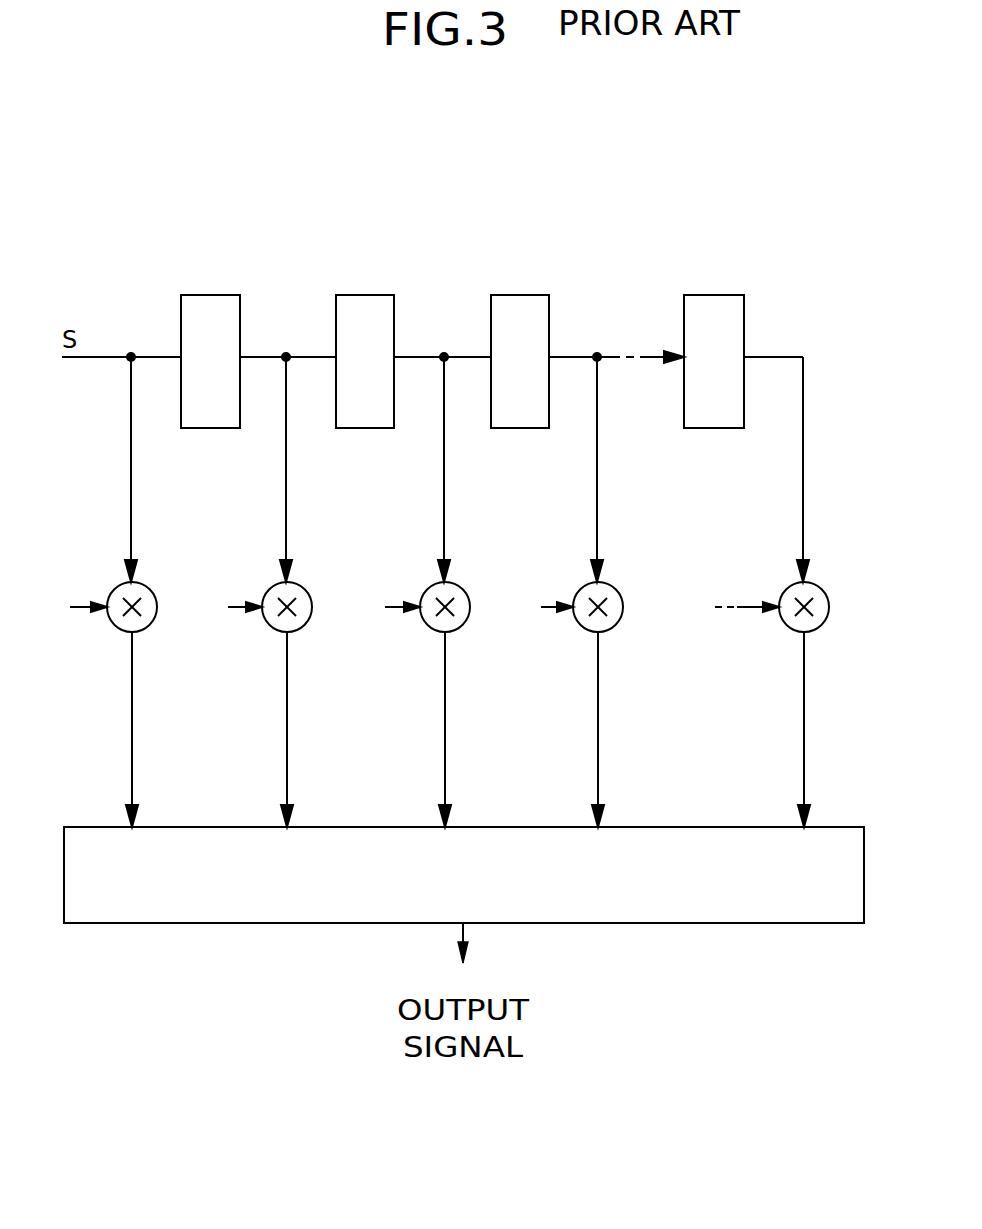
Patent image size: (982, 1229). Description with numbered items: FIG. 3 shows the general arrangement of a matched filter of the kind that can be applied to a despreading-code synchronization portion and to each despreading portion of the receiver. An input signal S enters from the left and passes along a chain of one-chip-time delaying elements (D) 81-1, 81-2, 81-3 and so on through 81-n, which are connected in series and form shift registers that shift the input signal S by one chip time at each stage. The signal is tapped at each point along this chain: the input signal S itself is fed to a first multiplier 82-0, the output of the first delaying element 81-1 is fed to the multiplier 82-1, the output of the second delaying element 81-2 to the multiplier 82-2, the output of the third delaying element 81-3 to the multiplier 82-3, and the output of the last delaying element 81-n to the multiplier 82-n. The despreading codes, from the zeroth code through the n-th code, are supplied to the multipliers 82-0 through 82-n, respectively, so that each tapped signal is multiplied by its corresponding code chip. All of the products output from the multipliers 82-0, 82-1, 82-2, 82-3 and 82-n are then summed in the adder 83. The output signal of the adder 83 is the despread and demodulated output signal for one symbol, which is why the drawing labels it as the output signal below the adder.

The one-chip-time delaying element 81-1 is at (210, 345).
The one-chip-time delaying element 81-2 is at (365, 345).
The one-chip-time delaying element 81-3 is at (520, 345).
The one-chip-time delaying element 81-n is at (714, 345).
The multiplier 82-0 is at (117, 592).
The multiplier 82-1 is at (272, 592).
The multiplier 82-2 is at (429, 592).
The multiplier 82-3 is at (584, 592).
The multiplier 82-n is at (789, 592).
The adder 83 is at (464, 895).